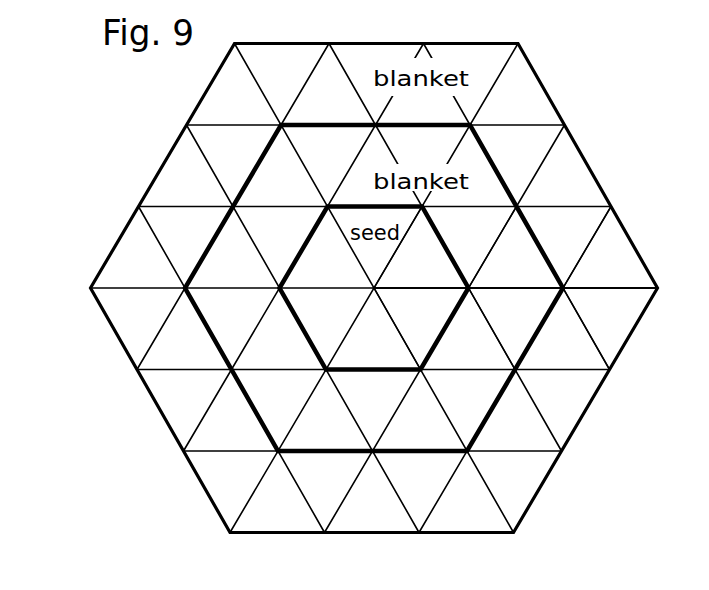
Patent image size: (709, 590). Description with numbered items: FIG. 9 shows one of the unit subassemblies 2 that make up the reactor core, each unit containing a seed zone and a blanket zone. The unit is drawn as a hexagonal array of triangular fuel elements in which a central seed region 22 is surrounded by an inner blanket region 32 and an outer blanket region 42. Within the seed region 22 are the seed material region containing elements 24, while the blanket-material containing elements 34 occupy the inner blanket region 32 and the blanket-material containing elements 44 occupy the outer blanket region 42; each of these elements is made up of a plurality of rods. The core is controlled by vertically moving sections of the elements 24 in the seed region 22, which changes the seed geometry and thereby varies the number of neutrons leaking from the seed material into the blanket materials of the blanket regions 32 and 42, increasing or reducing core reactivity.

The reactor core 2 is at (541, 83).
The seed region 22 is at (443, 240).
The blanket region 32 is at (533, 233).
The blanket region 42 is at (620, 222).
The seed material region containing element 24 is at (430, 288).
The blanket-material containing element 34 is at (526, 288).
The blanket-material containing element 44 is at (618, 288).